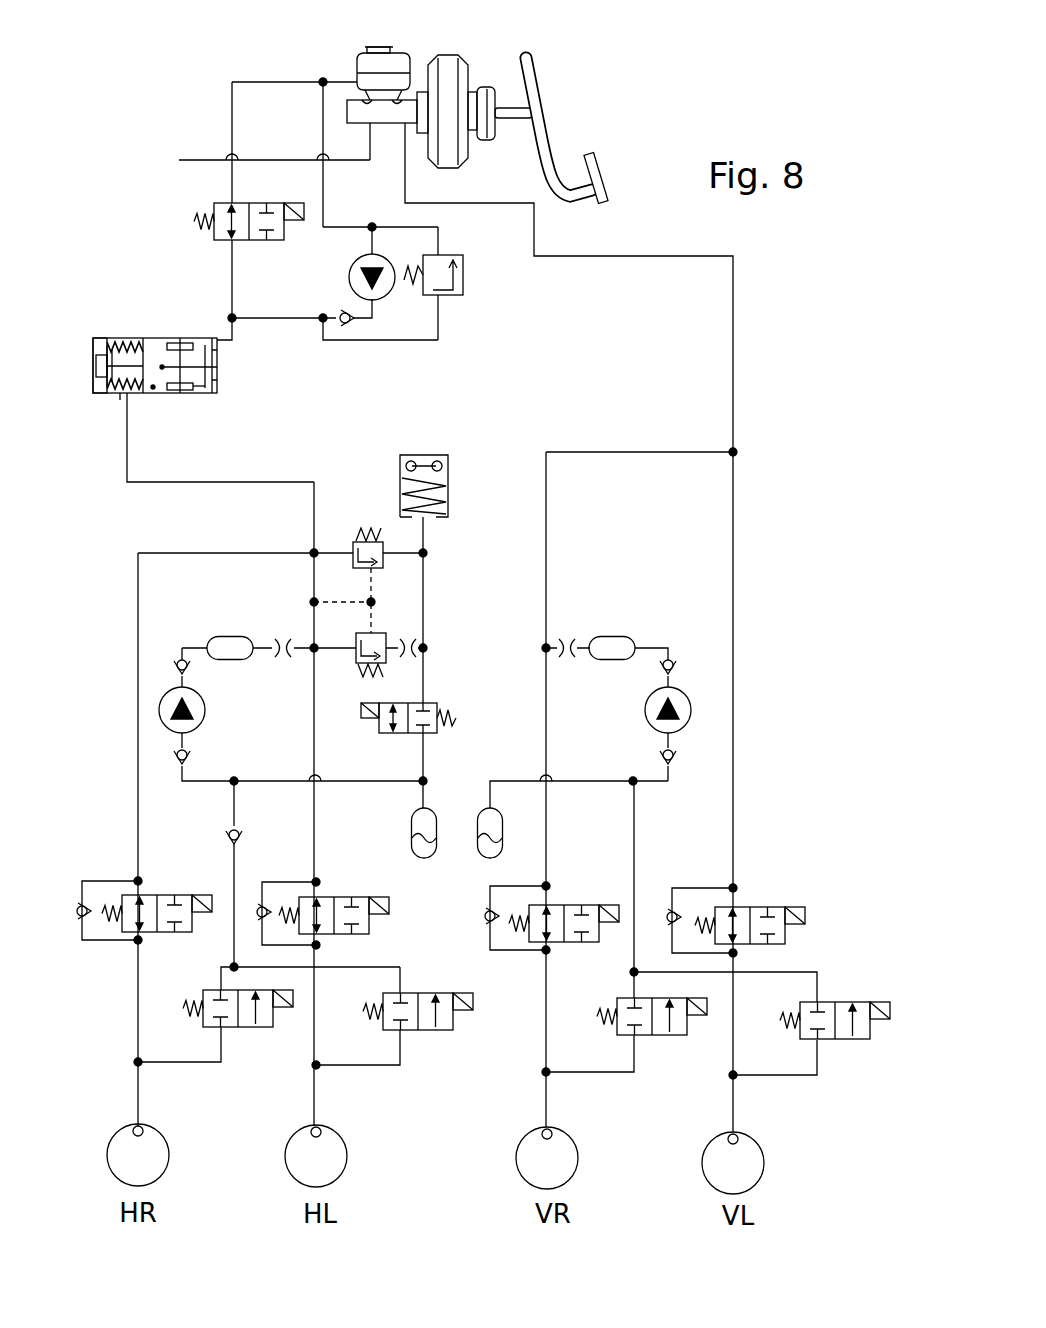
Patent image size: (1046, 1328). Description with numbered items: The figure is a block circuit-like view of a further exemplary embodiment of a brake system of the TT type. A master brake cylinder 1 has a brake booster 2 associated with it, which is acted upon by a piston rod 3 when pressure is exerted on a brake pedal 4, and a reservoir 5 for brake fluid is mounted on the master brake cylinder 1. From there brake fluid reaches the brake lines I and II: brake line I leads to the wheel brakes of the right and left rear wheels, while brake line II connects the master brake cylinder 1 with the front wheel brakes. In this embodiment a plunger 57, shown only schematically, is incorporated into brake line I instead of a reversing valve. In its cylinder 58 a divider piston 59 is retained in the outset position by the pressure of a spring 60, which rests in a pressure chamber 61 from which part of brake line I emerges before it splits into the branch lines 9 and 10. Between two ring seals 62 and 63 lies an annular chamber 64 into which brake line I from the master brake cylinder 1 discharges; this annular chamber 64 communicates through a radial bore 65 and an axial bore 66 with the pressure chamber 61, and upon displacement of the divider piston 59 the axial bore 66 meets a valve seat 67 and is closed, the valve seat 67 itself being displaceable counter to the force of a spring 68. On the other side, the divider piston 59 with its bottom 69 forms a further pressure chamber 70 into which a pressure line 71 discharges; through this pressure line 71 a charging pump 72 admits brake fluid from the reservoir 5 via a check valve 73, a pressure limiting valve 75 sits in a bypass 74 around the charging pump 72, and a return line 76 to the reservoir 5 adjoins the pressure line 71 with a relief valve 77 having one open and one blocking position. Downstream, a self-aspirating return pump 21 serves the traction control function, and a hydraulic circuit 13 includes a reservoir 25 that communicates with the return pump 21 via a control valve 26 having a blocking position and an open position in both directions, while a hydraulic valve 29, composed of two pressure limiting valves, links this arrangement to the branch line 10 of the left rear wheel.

The master brake cylinder 1 is at (370, 113).
The brake booster 2 is at (448, 157).
The piston rod 3 is at (515, 122).
The brake pedal 4 is at (547, 120).
The reservoir 5 is at (357, 63).
The branch line 9 is at (139, 589).
The branch line 10 is at (311, 572).
The hydraulic circuit 13 is at (430, 552).
The return pump 21 is at (205, 715).
The reservoir 25 is at (450, 473).
The control valve 26 is at (434, 703).
The hydraulic valve 29 is at (394, 619).
The plunger 57 is at (183, 357).
The cylinder 58 is at (200, 388).
The divider piston 59 is at (193, 350).
The spring 60 is at (123, 338).
The pressure chamber 61 is at (110, 393).
The ring seal 62 is at (153, 388).
The ring seal 63 is at (217, 383).
The annular chamber 64 is at (172, 341).
The radial bore 65 is at (183, 369).
The axial bore 66 is at (164, 368).
The valve seat 67 is at (125, 394).
The spring 68 is at (110, 338).
The bottom 69 is at (203, 389).
The pressure chamber 70 is at (220, 346).
The pressure line 71 is at (248, 316).
The charging pump 72 is at (350, 272).
The check valve 73 is at (338, 316).
The bypass 74 is at (414, 342).
The pressure limiting valve 75 is at (461, 256).
The return line 76 is at (228, 265).
The relief valve 77 is at (284, 203).
The brake line I is at (302, 160).
The brake line II is at (597, 256).